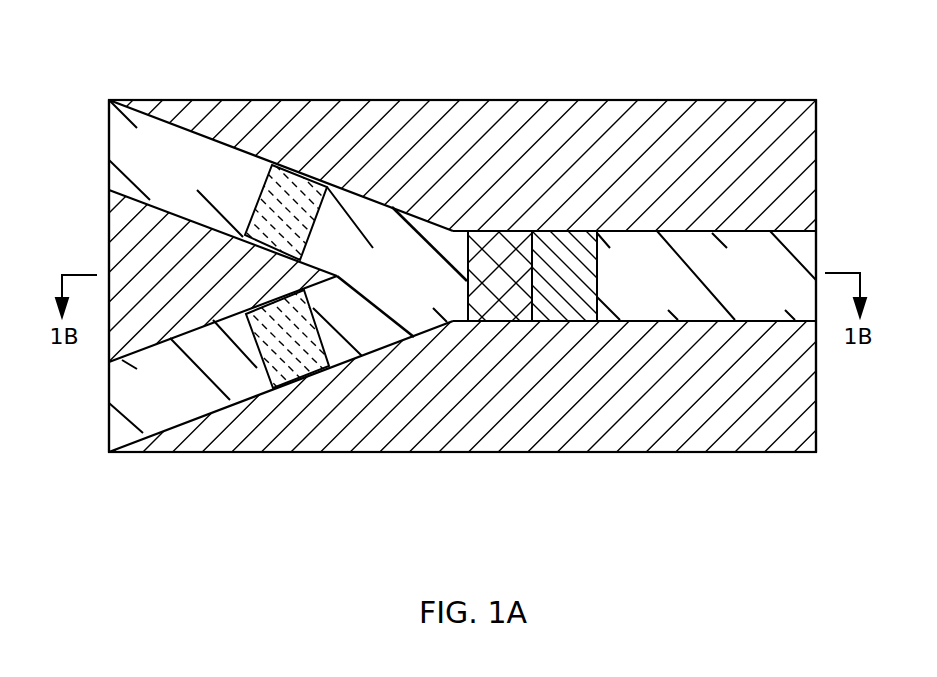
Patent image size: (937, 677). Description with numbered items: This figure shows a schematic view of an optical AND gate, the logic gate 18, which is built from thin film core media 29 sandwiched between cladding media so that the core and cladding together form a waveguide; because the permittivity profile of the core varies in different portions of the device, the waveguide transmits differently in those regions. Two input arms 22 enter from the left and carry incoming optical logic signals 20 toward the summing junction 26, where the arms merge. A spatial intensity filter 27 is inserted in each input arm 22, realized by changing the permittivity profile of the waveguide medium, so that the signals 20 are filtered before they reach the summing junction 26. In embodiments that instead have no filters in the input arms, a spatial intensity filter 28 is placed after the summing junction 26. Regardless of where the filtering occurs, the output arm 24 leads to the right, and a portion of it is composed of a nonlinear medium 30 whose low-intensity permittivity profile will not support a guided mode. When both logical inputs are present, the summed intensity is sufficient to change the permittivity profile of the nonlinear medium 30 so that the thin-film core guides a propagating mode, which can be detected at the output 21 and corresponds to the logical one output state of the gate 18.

The logic gate 18 is at (836, 429).
The incoming optical logic signals 20 is at (91, 135).
The output 21 is at (817, 250).
The input arms 22 is at (150, 203).
The output arm 24 is at (666, 320).
The summing junction 26 is at (382, 348).
The spatial intensity filter 27 is at (300, 170).
The spatial intensity filter 28 is at (493, 320).
The thin film core media 29 is at (215, 170).
The nonlinear medium 30 is at (558, 321).